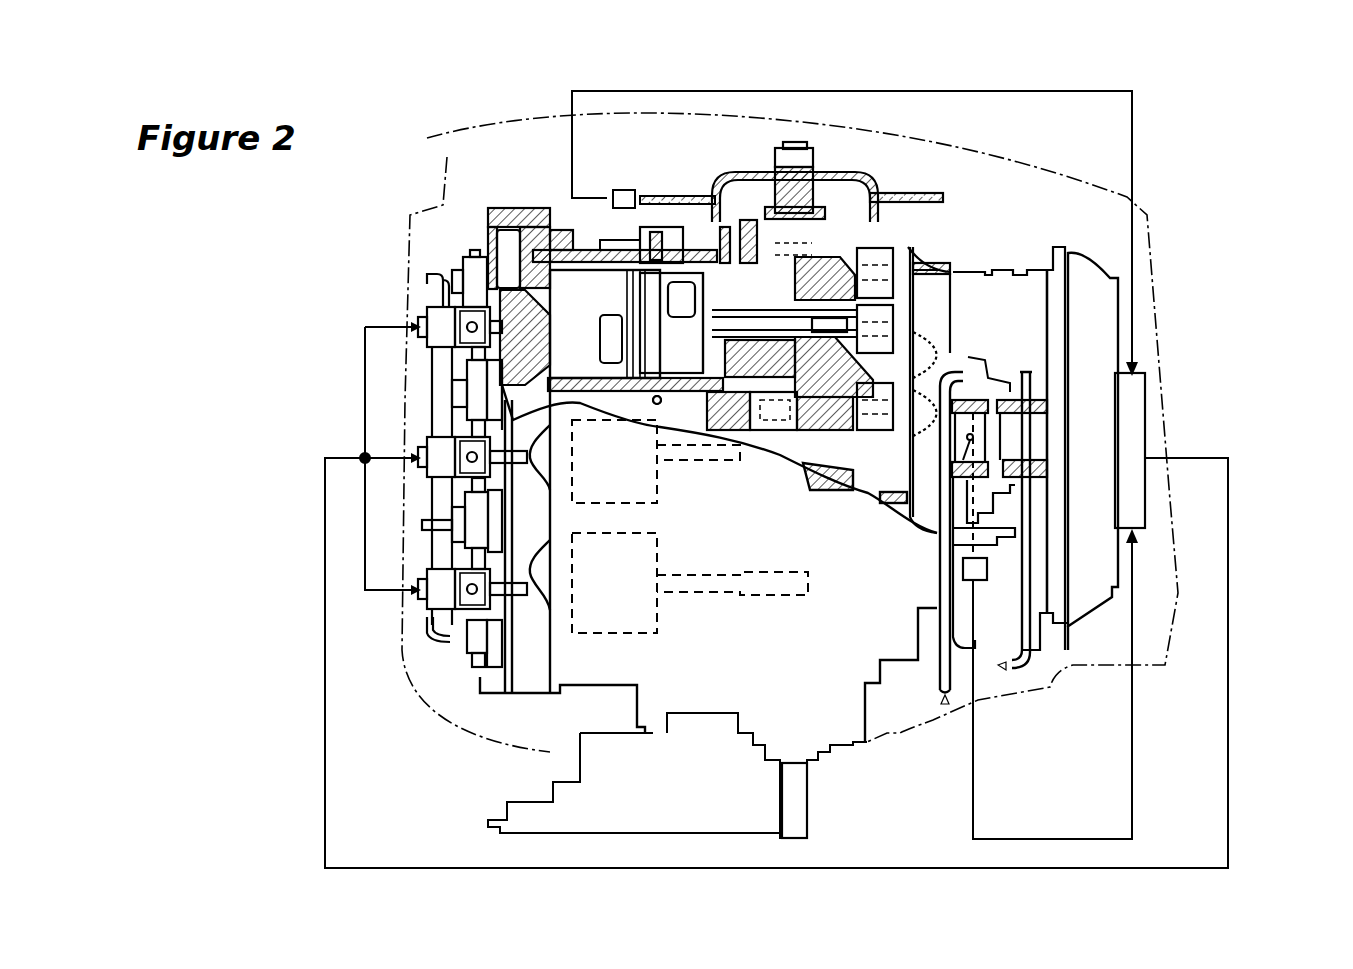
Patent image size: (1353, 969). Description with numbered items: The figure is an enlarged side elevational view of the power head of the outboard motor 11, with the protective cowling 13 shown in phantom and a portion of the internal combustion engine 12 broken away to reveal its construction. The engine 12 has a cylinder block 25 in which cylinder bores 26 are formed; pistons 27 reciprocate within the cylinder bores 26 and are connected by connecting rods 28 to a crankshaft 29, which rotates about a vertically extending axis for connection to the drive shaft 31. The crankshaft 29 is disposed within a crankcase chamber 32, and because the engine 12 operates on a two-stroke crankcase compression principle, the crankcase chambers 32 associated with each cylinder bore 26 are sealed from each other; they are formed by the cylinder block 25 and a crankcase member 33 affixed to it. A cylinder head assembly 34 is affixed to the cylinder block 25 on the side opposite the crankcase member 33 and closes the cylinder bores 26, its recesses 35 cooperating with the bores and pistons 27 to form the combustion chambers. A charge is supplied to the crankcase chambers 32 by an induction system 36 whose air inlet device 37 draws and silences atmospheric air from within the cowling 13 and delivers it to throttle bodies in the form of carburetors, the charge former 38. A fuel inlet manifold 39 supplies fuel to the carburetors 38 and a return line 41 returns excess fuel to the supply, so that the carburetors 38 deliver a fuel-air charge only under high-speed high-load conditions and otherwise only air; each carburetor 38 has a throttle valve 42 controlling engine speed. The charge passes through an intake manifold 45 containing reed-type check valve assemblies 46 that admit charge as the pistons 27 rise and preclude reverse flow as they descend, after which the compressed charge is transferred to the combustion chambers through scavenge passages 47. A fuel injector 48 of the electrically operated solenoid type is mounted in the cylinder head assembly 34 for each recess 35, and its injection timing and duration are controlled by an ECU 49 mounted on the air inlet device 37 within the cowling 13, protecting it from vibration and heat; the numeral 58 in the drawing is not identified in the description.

The outboard motor 11 is at (1257, 318).
The internal combustion engine 12 is at (1000, 213).
The protective cowling 13 is at (935, 142).
The cylinder block 25 is at (575, 268).
The cylinder bores 26 is at (620, 278).
The pistons 27 is at (655, 348).
The connecting rods 28 is at (748, 215).
The crankshaft 29 is at (793, 147).
The drive shaft 31 is at (807, 788).
The crankcase chamber 32 is at (780, 305).
The crankcase member 33 is at (877, 190).
The cylinder head assembly 34 is at (520, 210).
The recesses 35 is at (533, 347).
The induction system 36 is at (1088, 225).
The air inlet device 37 is at (1107, 267).
The charge former 38 is at (1000, 267).
The fuel inlet manifold 39 is at (937, 562).
The return line 41 is at (1022, 587).
The throttle valve 42 is at (970, 440).
The intake manifold 45 is at (930, 270).
The reed-type check valve assemblies 46 is at (900, 305).
The scavenge passages 47 is at (657, 404).
The fuel injector 48 is at (443, 315).
The ECU 49 is at (1147, 410).
The throttle position sensor 58 is at (630, 190).